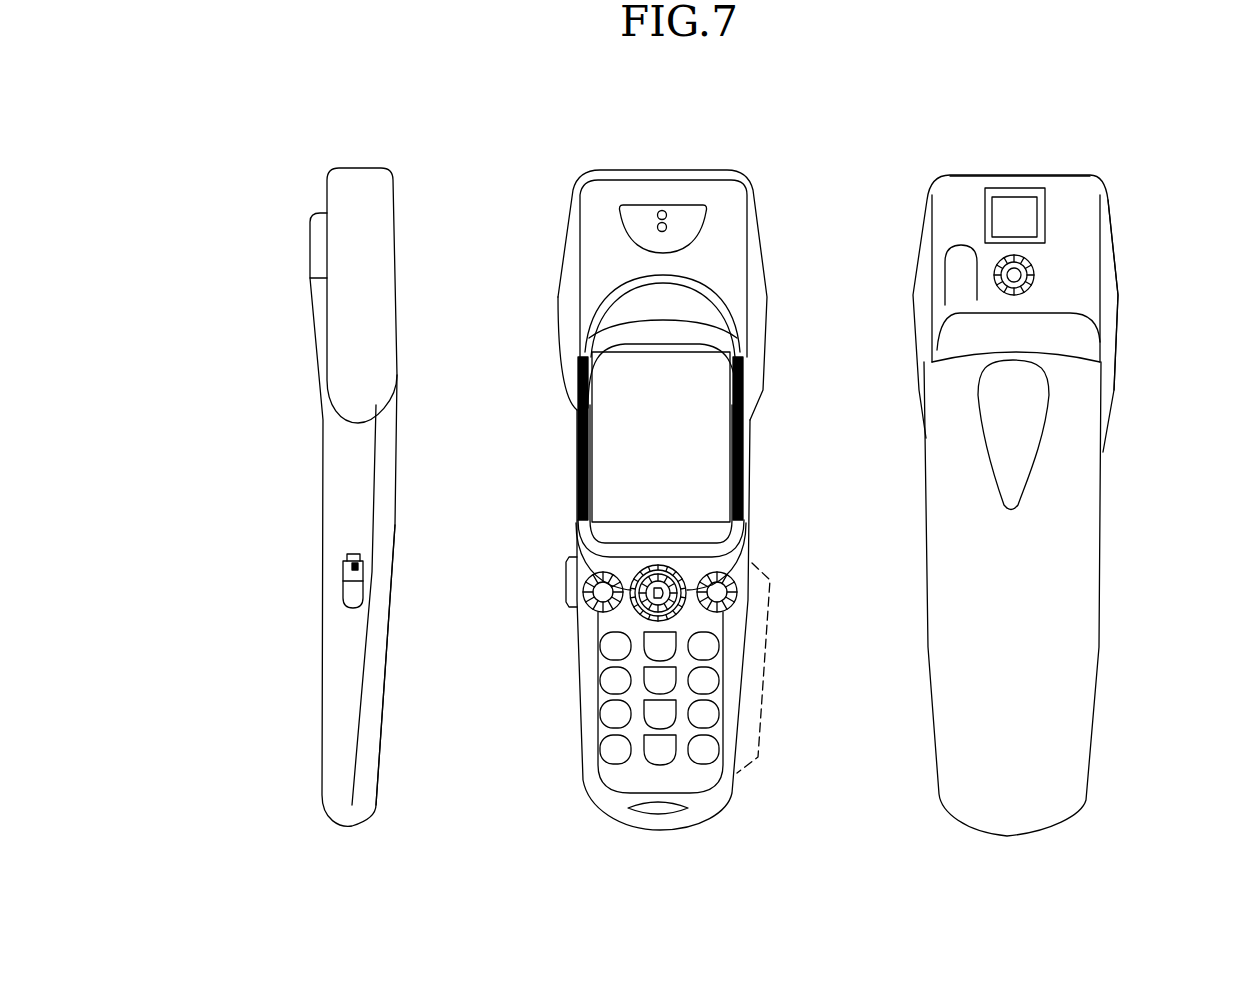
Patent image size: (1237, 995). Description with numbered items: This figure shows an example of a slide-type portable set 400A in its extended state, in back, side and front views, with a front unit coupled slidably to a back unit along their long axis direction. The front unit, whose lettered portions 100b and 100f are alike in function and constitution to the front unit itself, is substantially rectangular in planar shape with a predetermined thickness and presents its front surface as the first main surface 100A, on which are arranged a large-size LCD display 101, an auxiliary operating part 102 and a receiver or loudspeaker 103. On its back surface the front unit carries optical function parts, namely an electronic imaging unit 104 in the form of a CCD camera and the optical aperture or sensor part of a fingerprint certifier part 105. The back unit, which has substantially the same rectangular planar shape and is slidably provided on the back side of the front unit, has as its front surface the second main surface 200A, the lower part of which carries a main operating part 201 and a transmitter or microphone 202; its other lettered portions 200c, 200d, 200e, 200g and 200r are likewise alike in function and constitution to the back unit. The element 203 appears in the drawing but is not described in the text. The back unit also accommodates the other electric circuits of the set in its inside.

The mobile phone 400A is at (300, 125).
The second main surface 200A is at (383, 165).
The first main surface 100A is at (322, 755).
The fingerprint certifier part 105 is at (310, 232).
The back unit 200e is at (375, 295).
The electronic imaging unit 104 is at (343, 580).
The front unit 100f is at (398, 594).
The main operating part 201 is at (660, 205).
The back unit 200d is at (727, 205).
The back unit 200c is at (585, 402).
The display 101 is at (695, 462).
The front unit 100b is at (738, 520).
The auxiliary operating part 102 is at (763, 665).
The receiver 103 is at (662, 812).
The camera 203 is at (1015, 188).
The back unit 200r is at (1050, 182).
The transmitter 202 is at (1037, 275).
The back unit 200g is at (1118, 290).